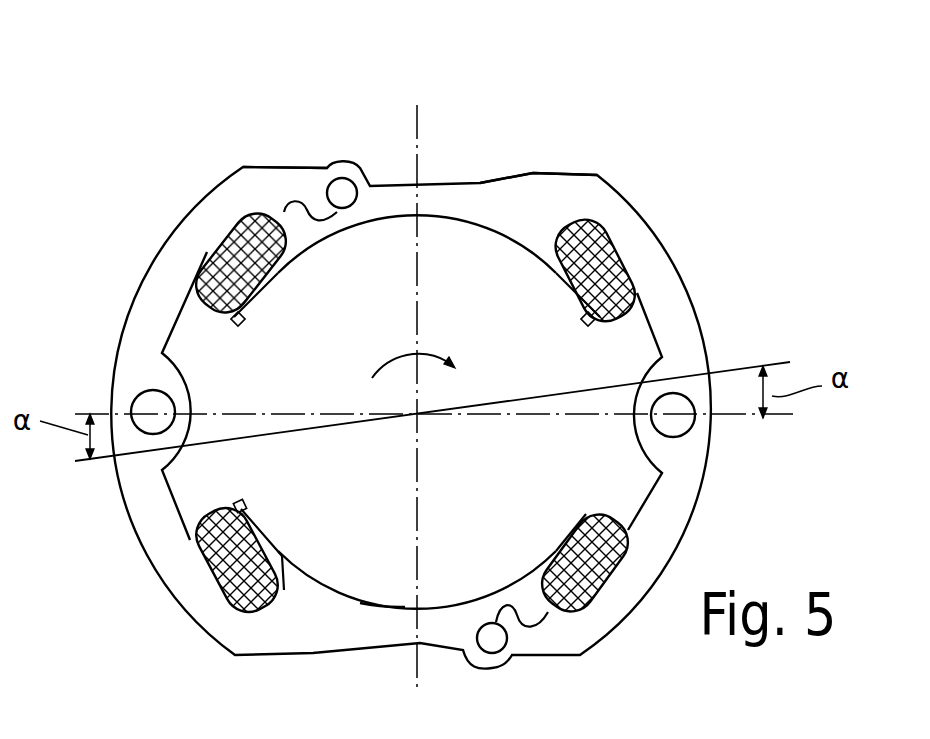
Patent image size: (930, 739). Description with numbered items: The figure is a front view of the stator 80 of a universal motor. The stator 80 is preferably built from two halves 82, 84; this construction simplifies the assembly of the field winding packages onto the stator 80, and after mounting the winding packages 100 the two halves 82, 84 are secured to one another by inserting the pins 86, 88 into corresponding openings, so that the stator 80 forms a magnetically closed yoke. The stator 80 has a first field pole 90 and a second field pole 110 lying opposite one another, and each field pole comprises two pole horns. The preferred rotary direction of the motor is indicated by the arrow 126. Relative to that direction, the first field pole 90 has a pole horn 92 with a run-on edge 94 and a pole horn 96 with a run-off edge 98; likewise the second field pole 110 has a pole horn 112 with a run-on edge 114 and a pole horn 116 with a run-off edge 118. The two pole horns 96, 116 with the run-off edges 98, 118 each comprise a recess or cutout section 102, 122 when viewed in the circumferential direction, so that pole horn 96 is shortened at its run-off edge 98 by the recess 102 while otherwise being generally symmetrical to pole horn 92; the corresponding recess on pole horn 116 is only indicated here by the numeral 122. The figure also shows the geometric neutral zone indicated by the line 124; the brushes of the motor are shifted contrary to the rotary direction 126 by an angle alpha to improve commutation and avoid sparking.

The stator 80 is at (660, 160).
The half of the stator 82 is at (560, 200).
The half of the stator 84 is at (272, 192).
The pin 86 is at (343, 193).
The pin 88 is at (494, 640).
The first field pole 90 is at (446, 236).
The pole horn 92 is at (296, 247).
The run-on edge 94 is at (243, 325).
The pole horn 96 is at (543, 257).
The run-off edge 98 is at (587, 323).
The winding packages 100 is at (208, 252).
The recess 102 is at (632, 287).
The second field pole 110 is at (381, 588).
The pole horn 112 is at (540, 560).
The run-on edge 114 is at (585, 507).
The pole horn 116 is at (280, 548).
The run-off edge 118 is at (252, 492).
The recess 122 is at (200, 542).
The line 124 is at (728, 420).
The arrow 126 is at (398, 350).